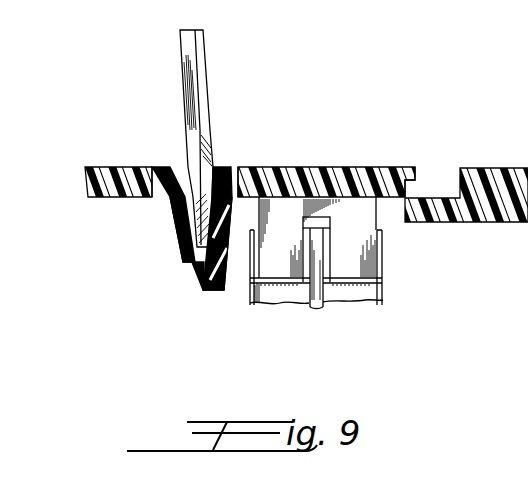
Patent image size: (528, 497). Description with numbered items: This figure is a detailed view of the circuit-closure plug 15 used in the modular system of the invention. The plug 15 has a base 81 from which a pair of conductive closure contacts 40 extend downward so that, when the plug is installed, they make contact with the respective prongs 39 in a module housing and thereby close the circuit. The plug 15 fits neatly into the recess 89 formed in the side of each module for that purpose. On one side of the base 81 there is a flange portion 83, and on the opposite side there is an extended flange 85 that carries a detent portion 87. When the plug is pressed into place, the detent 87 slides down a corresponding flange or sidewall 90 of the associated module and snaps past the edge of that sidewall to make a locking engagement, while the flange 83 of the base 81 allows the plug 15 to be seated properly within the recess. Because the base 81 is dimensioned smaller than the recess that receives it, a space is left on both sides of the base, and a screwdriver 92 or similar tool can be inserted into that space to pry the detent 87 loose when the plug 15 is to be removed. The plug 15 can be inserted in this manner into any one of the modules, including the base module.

The circuit-closure plug 15 is at (308, 162).
The prongs 39 is at (298, 300).
The conductive closure contacts 40 is at (277, 270).
The base 81 is at (240, 173).
The flange portion 83 is at (418, 172).
The extended flange 85 is at (227, 272).
The detent portion 87 is at (195, 270).
The recess 89 is at (452, 182).
The flange or sidewall 90 is at (197, 212).
The screwdriver 92 is at (207, 100).